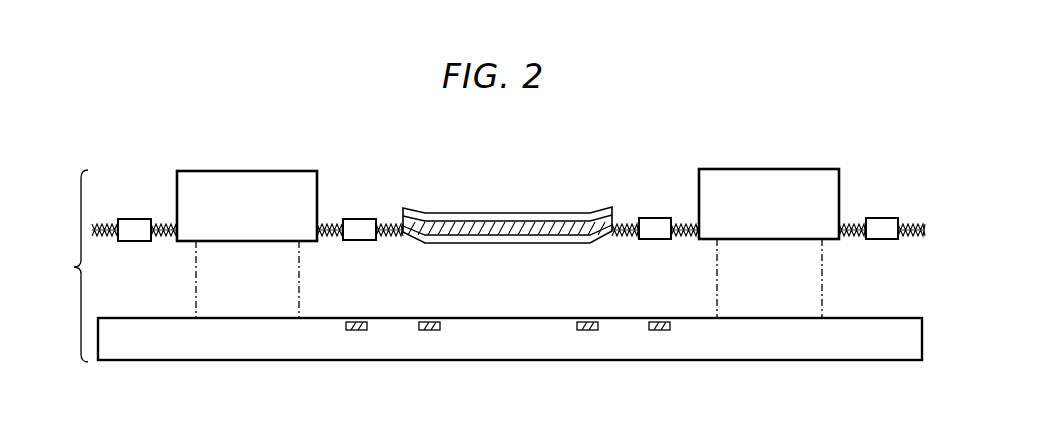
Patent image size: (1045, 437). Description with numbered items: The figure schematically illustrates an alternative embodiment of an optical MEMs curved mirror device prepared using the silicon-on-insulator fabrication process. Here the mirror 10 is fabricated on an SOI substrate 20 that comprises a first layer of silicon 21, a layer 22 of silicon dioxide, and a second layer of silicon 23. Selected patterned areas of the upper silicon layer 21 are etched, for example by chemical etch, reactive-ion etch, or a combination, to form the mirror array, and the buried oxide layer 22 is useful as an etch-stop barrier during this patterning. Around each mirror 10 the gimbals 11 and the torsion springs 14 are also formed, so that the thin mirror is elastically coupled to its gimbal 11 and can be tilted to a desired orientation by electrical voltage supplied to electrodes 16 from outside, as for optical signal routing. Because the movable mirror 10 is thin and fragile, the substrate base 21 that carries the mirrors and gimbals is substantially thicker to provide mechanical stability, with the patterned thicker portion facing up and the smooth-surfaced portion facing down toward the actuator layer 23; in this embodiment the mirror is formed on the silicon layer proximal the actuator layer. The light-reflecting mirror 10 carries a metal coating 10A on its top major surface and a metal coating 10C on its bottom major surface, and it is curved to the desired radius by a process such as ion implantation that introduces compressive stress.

The curved mirror 10 is at (507, 230).
The metal coating 10A is at (462, 213).
The metal coating 10C is at (505, 244).
The gimbal 11 is at (655, 218).
The torsion springs 14 is at (388, 220).
The electrodes 16 is at (357, 331).
The SOI substrate 20 is at (69, 266).
The first layer of silicon 21 is at (244, 179).
The layer of SiO2 22 is at (203, 284).
The second layer of silicon 23 is at (720, 348).